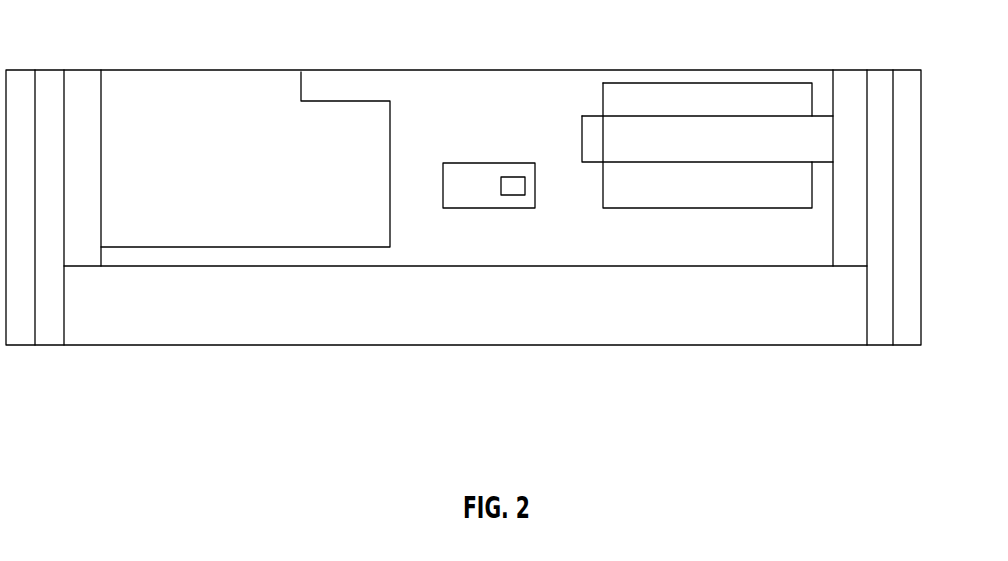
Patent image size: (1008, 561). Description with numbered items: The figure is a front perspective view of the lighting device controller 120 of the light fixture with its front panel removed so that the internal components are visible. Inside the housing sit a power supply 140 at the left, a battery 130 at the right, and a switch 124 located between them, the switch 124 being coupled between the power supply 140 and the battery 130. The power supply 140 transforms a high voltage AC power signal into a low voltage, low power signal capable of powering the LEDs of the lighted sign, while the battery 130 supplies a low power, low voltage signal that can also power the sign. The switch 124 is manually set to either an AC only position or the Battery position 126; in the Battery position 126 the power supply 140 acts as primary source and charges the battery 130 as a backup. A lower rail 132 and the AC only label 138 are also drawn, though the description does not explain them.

The lighting device controller 120 is at (136, 407).
The switch 124 is at (489, 152).
The Battery position 126 is at (585, 252).
The battery 130 is at (728, 82).
The lower rail 132 is at (759, 278).
The AC only label 138 is at (438, 237).
The power supply 140 is at (199, 106).